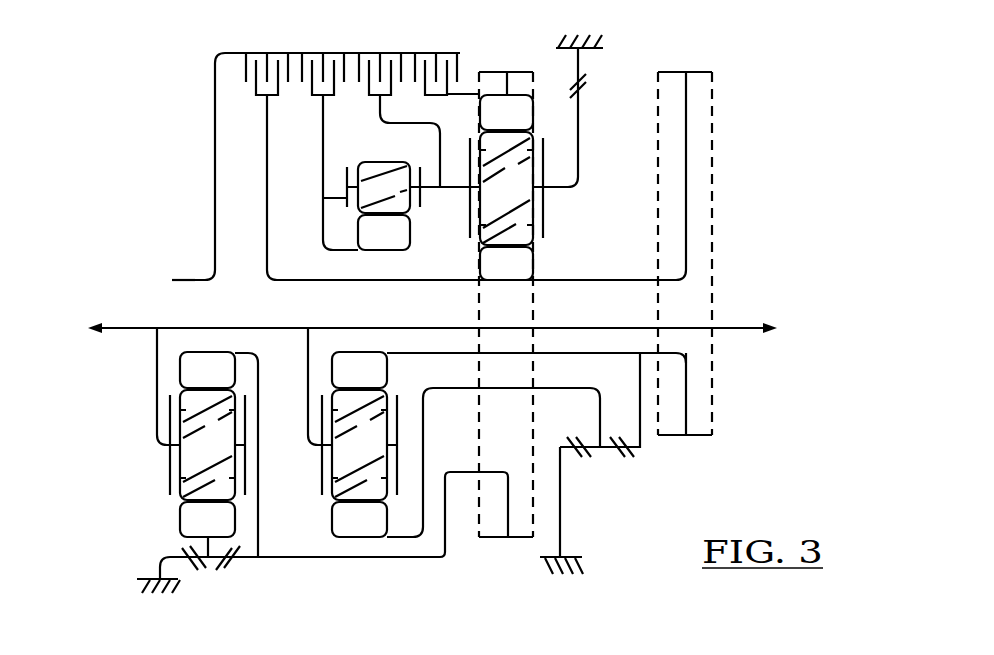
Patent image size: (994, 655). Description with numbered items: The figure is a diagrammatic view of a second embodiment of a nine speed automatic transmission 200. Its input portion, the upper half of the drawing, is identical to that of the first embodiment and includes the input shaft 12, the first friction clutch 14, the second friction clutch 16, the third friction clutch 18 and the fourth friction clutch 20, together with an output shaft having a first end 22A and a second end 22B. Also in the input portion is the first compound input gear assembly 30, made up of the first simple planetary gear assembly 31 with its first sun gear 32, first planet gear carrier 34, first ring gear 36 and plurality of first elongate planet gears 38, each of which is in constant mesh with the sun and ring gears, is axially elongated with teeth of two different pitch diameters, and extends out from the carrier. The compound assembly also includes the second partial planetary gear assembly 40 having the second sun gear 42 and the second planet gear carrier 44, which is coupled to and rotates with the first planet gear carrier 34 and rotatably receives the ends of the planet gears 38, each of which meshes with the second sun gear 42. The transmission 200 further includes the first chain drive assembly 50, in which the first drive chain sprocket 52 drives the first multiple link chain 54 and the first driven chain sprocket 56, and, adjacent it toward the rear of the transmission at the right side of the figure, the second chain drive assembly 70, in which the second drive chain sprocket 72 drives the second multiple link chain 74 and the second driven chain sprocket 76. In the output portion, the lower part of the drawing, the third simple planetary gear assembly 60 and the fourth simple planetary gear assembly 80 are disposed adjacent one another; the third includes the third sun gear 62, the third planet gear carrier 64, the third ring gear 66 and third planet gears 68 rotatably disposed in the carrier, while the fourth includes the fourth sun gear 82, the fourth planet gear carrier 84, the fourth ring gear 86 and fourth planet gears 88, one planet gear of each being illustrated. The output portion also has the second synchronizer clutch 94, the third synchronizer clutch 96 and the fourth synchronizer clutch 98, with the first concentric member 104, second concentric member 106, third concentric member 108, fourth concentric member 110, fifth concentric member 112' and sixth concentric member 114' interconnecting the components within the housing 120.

The input shaft 12 is at (214, 214).
The first friction clutch 14 is at (253, 77).
The second friction clutch 16 is at (310, 80).
The third friction clutch 18 is at (368, 80).
The fourth friction clutch 20 is at (416, 82).
The first end of the output shaft 22A is at (138, 330).
The second end of the output shaft 22B is at (740, 327).
The first compound input gear assembly 30 is at (222, 42).
The first simple planetary gear assembly 31 is at (490, 293).
The first sun gear 32 is at (520, 276).
The first planet gear carrier 34 is at (545, 207).
The first ring gear 36 is at (520, 125).
The first elongate planet gears 38 is at (398, 199).
The second partial planetary gear assembly 40 is at (371, 264).
The second sun gear 42 is at (398, 245).
The second planet gear carrier 44 is at (330, 200).
The first chain drive assembly 50 is at (540, 45).
The first drive chain sprocket 52 is at (510, 65).
The first multiple link chain 54 is at (535, 321).
The first driven chain sprocket 56 is at (517, 542).
The third simple planetary gear assembly 60 is at (166, 538).
The third sun gear 62 is at (221, 382).
The third planet gear carrier 64 is at (246, 473).
The third ring gear 66 is at (221, 532).
The third planet gears 68 is at (221, 457).
The second chain drive assembly 70 is at (742, 110).
The second drive chain sprocket 72 is at (698, 68).
The second multiple link chain 74 is at (713, 255).
The second driven chain sprocket 76 is at (702, 438).
The fourth simple planetary gear assembly 80 is at (362, 548).
The fourth sun gear 82 is at (373, 382).
The fourth planet gear carrier 84 is at (398, 437).
The fourth ring gear 86 is at (373, 532).
The fourth planet gears 88 is at (373, 457).
The second synchronizer clutch (brake) 94 is at (192, 565).
The third synchronizer clutch (brake) 96 is at (577, 457).
The fourth synchronizer clutch 98 is at (223, 560).
The first shaft, quill or concentric member 104 is at (266, 153).
The second shaft, quill or concentric member 106 is at (323, 117).
The third shaft, quill or concentric member 108 is at (378, 113).
The fourth shaft, quill or concentric member 110 is at (466, 93).
The fifth shaft, quill or concentric member 112' is at (404, 535).
The sixth shaft, quill or concentric member 114' is at (536, 368).
The housing 120 is at (600, 40).
The multiple speed automatic transmission 200 is at (774, 182).